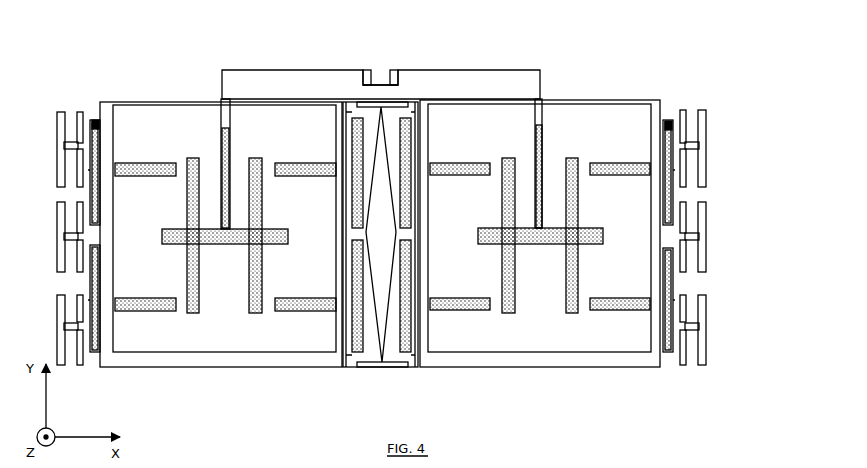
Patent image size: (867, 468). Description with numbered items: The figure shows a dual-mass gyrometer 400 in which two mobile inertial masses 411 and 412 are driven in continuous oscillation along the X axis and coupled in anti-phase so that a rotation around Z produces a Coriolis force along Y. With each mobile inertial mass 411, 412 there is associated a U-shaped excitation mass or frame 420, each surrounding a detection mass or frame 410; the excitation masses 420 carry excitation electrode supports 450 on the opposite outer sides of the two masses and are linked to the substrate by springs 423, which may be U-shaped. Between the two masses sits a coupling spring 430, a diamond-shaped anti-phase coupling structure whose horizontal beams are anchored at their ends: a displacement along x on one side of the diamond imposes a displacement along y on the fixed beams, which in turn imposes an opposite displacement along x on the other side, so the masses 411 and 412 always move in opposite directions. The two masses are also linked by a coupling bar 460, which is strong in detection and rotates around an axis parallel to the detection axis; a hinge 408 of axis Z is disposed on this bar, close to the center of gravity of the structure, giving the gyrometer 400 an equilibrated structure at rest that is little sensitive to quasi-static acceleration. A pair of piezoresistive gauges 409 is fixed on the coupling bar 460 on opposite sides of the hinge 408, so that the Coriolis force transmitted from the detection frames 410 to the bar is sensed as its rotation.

The dual-mass gyrometer 400 is at (387, 46).
The hinge 408 is at (378, 82).
The piezoresistive gauges 409 is at (367, 78).
The detection mass or frame 410 is at (133, 143).
The mobile inertial mass 411 is at (182, 206).
The mobile inertial mass 412 is at (568, 97).
The excitation mass or frame 420 is at (113, 237).
The springs 423 is at (94, 120).
The coupling spring 430 is at (388, 345).
The excitation electrode supports 450 is at (71, 326).
The coupling bar 460 is at (480, 78).